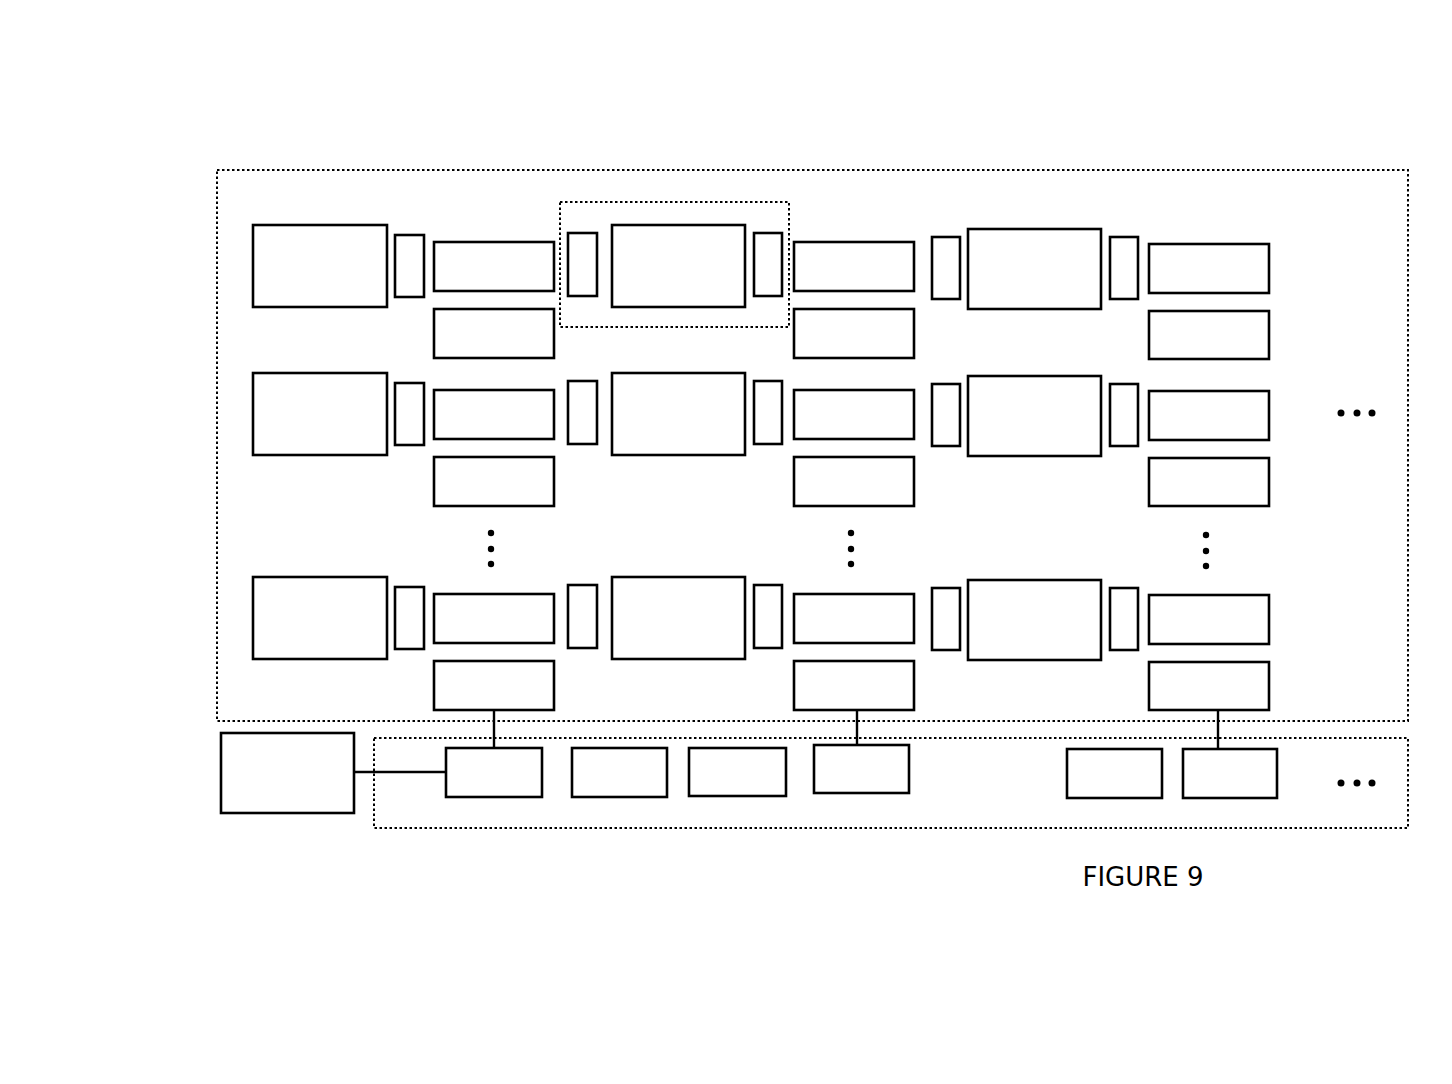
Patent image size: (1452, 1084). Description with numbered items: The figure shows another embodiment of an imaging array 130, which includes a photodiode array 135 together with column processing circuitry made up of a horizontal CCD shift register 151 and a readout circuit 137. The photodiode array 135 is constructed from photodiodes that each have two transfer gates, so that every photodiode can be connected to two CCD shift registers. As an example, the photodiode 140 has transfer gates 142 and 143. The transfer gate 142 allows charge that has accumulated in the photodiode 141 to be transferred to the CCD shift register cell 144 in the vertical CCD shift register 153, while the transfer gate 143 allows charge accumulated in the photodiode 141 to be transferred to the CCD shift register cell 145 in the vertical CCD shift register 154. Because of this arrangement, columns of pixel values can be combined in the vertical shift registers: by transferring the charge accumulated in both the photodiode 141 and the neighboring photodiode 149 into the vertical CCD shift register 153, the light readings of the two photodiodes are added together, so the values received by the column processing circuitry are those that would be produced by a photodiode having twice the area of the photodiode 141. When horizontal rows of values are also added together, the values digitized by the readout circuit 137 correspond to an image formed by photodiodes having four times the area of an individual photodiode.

The imaging array 130 is at (203, 163).
The photodiode array 135 is at (217, 400).
The readout circuit 137 is at (280, 808).
The photodiode 140 is at (667, 212).
The photodiode 141 is at (654, 280).
The transfer gate 142 is at (583, 240).
The transfer gate 143 is at (770, 243).
The CCD shift register cell 144 is at (457, 250).
The CCD shift register cell 145 is at (905, 250).
The photodiode 149 is at (296, 280).
The horizontal CCD shift register 151 is at (577, 829).
The vertical CCD shift register 153 is at (493, 232).
The vertical CCD shift register 154 is at (848, 232).